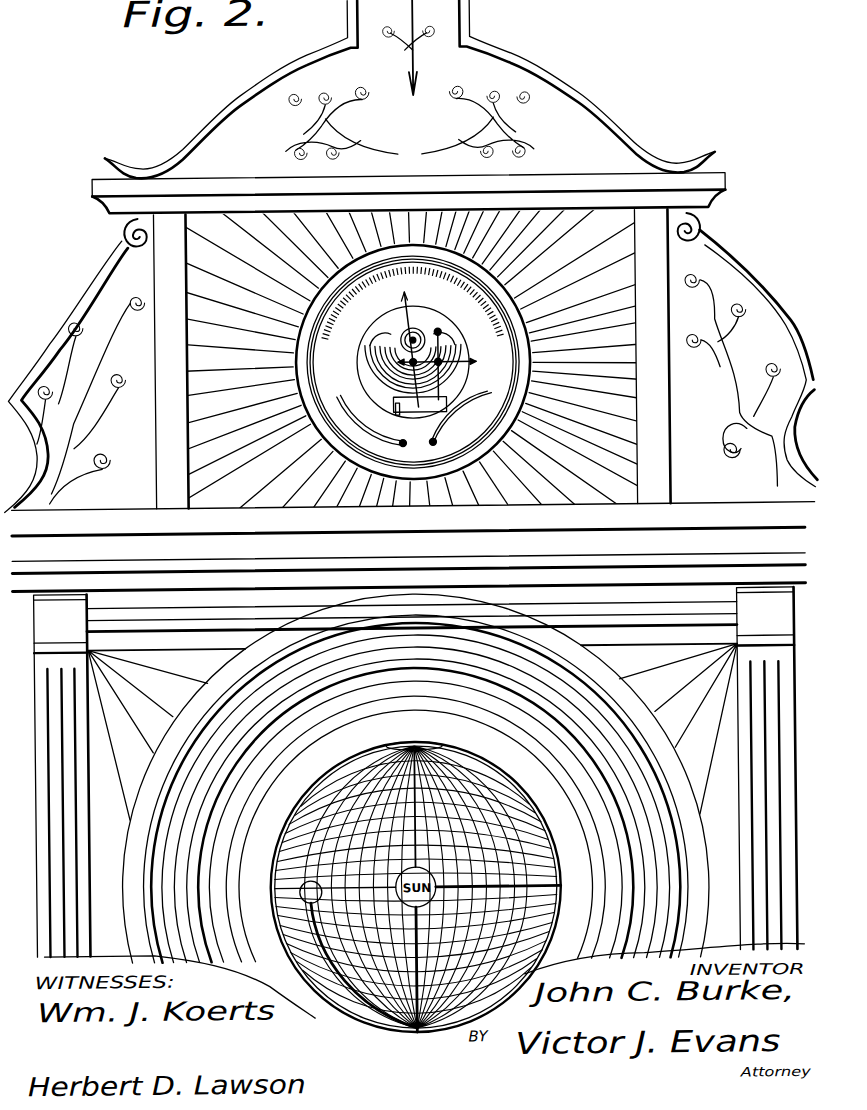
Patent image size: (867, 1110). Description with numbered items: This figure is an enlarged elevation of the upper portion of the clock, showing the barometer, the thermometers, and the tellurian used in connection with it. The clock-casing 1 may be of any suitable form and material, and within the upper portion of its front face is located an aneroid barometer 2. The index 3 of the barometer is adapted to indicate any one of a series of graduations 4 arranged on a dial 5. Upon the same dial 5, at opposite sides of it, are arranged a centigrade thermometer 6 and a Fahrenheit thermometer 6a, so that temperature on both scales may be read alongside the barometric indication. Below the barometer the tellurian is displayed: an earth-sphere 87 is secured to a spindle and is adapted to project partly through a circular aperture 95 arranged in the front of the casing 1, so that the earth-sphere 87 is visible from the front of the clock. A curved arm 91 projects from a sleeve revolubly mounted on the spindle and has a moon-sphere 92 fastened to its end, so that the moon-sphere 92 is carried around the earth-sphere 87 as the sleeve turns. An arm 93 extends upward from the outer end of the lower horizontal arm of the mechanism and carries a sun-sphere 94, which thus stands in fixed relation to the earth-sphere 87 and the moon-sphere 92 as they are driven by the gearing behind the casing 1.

The clock-casing 1 is at (744, 266).
The aneroid barometer 2 is at (419, 336).
The index 3 is at (418, 290).
The graduations 4 is at (333, 312).
The dial 5 is at (330, 300).
The centigrade thermometer 6 is at (332, 460).
The Fahrenheit thermometer 6a is at (493, 390).
The earth-sphere 87 is at (441, 748).
The curved arm 91 is at (352, 1005).
The moon-sphere 92 is at (300, 884).
The arm 93 is at (410, 1030).
The sun-sphere 94 is at (557, 893).
The circular aperture 95 is at (553, 842).